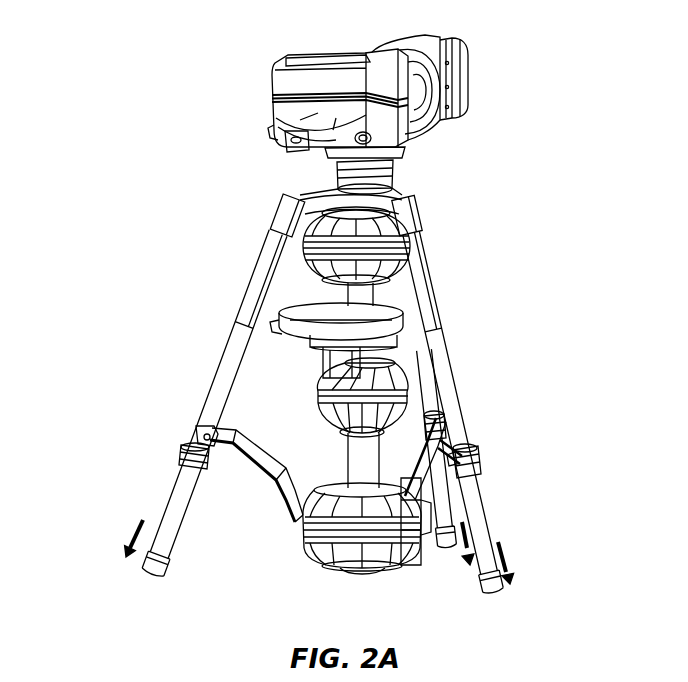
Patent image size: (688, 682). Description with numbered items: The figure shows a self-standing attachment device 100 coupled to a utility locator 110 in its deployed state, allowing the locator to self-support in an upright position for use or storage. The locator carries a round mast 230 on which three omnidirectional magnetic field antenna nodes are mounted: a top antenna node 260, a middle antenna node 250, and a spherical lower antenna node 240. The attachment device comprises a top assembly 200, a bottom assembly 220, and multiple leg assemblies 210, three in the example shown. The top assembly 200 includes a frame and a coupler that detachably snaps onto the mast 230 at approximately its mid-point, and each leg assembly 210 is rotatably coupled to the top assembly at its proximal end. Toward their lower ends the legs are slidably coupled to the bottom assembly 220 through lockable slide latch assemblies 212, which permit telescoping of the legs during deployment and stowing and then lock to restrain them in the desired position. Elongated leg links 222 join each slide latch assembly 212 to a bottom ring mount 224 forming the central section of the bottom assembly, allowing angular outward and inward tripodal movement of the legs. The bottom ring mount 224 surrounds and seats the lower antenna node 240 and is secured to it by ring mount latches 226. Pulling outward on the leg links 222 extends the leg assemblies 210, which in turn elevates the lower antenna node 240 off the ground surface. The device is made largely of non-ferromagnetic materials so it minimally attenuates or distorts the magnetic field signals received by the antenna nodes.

The self-standing attachment device 100 is at (258, 198).
The utility locator 110 is at (476, 50).
The top assembly 200 is at (410, 191).
The leg assemblies 210 is at (232, 328).
The slide latch assembly 212 is at (180, 455).
The bottom assembly 220 is at (302, 560).
The leg links 222 is at (275, 500).
The bottom ring mount 224 is at (392, 565).
The ring mount latches 226 is at (347, 565).
The mast 230 is at (373, 292).
The lower antenna node 240 is at (328, 482).
The middle antenna node 250 is at (400, 356).
The top antenna node 260 is at (298, 270).